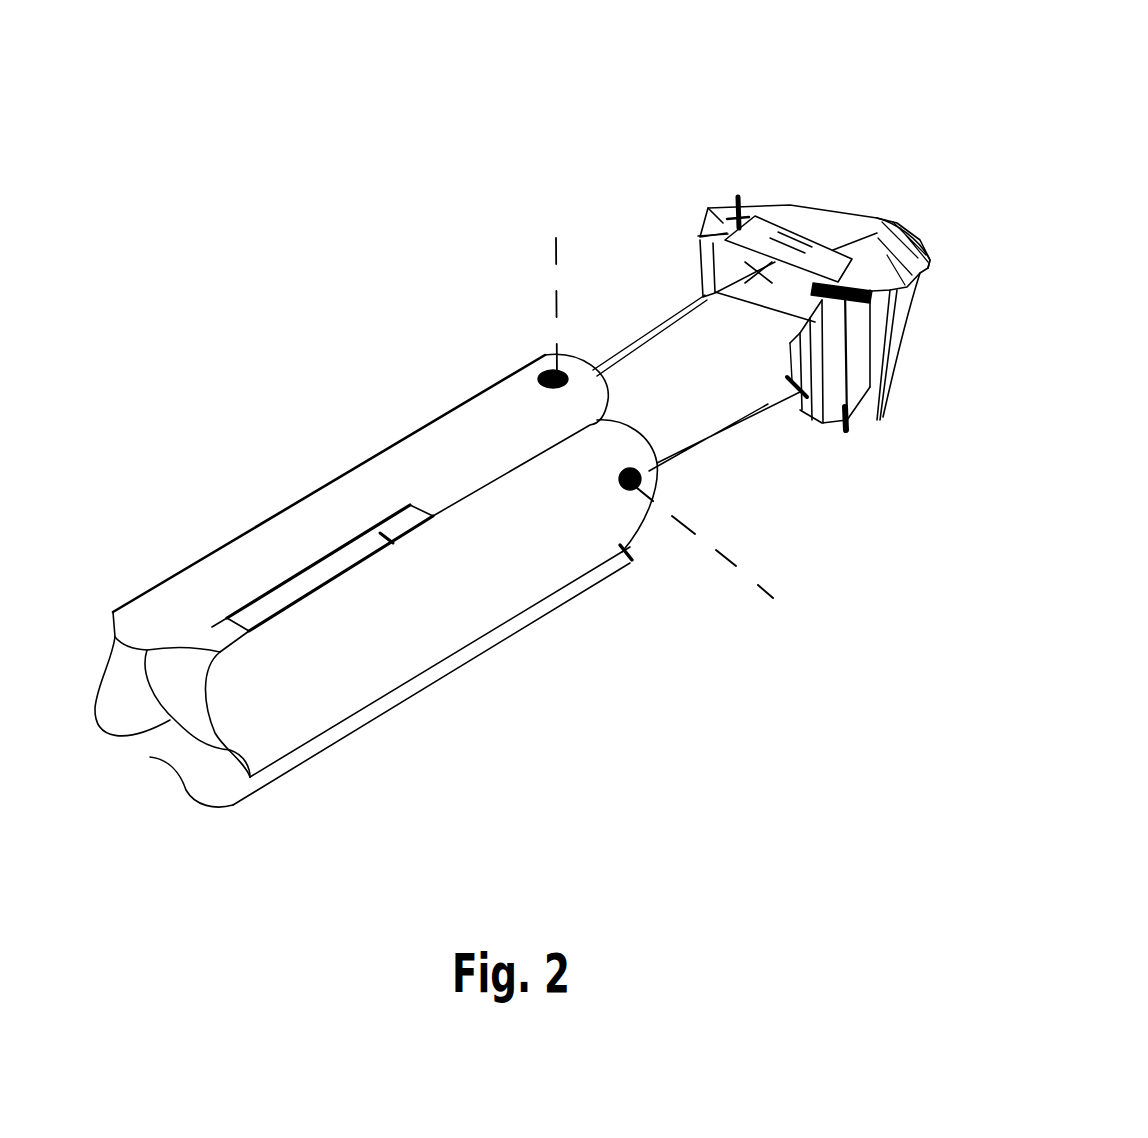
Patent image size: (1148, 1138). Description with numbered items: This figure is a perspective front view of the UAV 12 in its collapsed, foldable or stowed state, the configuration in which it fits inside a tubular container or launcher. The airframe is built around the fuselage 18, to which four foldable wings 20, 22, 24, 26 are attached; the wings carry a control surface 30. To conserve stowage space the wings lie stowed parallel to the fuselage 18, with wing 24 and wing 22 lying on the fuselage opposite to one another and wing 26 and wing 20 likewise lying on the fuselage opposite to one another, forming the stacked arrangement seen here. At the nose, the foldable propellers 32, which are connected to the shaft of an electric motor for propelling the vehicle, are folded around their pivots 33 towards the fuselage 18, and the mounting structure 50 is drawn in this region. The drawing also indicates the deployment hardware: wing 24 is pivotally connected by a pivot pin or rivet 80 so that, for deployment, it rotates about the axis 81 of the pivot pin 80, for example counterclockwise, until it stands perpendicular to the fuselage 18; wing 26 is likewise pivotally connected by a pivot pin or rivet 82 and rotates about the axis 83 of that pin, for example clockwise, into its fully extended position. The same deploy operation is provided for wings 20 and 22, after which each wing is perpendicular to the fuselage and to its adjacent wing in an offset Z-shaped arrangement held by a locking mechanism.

The UAV 12 is at (205, 343).
The fuselage 18 is at (177, 727).
The foldable wing 20 is at (238, 807).
The foldable wing 22 is at (103, 733).
The foldable wing 24 is at (478, 587).
The foldable wing 26 is at (505, 400).
The control surface 30 is at (405, 527).
The foldable propeller 32 is at (807, 208).
The pivot 33 is at (885, 215).
The mounting head 50 is at (700, 270).
The pivot pin 80 is at (640, 473).
The axis 81 is at (723, 557).
The pivot pin 82 is at (550, 372).
The axis 83 is at (547, 287).